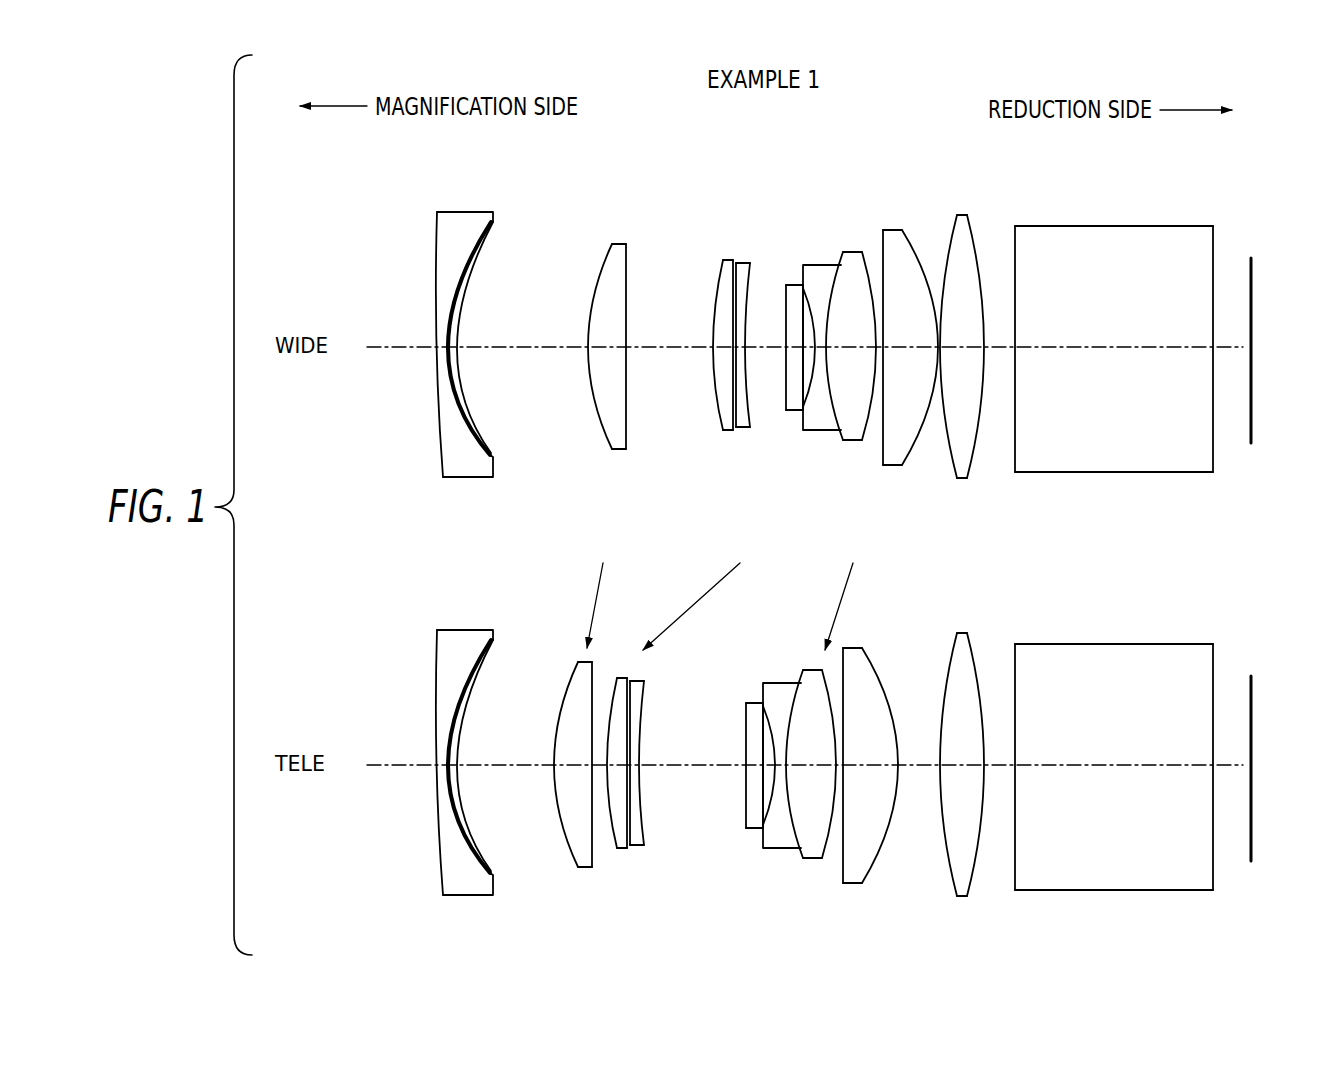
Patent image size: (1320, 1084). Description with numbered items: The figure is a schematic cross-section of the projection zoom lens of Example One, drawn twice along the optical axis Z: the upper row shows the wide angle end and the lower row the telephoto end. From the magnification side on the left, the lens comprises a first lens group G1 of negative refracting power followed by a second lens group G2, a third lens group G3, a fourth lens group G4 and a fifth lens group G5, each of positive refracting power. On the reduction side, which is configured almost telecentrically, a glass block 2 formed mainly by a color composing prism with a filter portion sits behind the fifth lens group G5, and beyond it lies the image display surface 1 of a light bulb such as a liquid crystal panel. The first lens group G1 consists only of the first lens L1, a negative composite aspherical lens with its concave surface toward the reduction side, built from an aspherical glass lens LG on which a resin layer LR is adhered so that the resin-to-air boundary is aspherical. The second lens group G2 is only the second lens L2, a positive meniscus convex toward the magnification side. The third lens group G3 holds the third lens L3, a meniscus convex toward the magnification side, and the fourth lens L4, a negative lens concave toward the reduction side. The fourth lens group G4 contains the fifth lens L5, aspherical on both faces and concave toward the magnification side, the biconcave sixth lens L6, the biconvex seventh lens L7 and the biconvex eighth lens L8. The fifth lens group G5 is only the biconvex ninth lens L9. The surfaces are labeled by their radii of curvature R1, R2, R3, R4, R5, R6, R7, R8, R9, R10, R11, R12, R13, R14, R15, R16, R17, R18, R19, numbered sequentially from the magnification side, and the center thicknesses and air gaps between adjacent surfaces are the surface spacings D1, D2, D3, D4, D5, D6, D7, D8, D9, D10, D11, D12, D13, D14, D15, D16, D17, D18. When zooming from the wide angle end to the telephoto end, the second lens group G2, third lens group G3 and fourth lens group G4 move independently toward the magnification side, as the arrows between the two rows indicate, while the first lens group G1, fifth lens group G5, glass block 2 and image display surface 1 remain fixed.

The image display surface 1 is at (1257, 280).
The glass block 2 is at (1122, 523).
The optical axis Z is at (367, 352).
The first lens group G1 is at (508, 505).
The second lens group G2 is at (642, 505).
The third lens group G3 is at (760, 505).
The fourth lens group G4 is at (933, 505).
The fifth lens group G5 is at (995, 505).
The first lens L1 is at (458, 306).
The glass lens LG is at (458, 319).
The resin layer LR is at (486, 337).
The second lens L2 is at (614, 314).
The third lens L3 is at (707, 307).
The fourth lens L4 is at (761, 314).
The fifth lens L5 is at (787, 301).
The sixth lens L6 is at (826, 301).
The seventh lens L7 is at (862, 309).
The eighth lens L8 is at (897, 306).
The ninth lens L9 is at (971, 317).
The lens surface radius of curvature R1 is at (438, 255).
The lens surface radius of curvature R2 is at (488, 226).
The lens surface radius of curvature R3 is at (461, 335).
The lens surface radius of curvature R4 is at (600, 258).
The lens surface radius of curvature R5 is at (630, 258).
The lens surface radius of curvature R6 is at (715, 290).
The lens surface radius of curvature R7 is at (733, 258).
The lens surface radius of curvature R8 is at (750, 275).
The lens surface radius of curvature R9 is at (787, 342).
The lens surface radius of curvature R10 is at (787, 327).
The lens surface radius of curvature R11 is at (806, 265).
The lens surface radius of curvature R12 is at (840, 252).
The lens surface radius of curvature R13 is at (866, 333).
The lens surface radius of curvature R14 is at (883, 228).
The lens surface radius of curvature R15 is at (915, 250).
The lens surface radius of curvature R16 is at (945, 265).
The lens surface radius of curvature R17 is at (982, 240).
The surface radius of curvature R18 is at (1013, 285).
The surface radius of curvature R19 is at (1213, 250).
The surface spacing D1 is at (437, 349).
The surface spacing D2 is at (455, 349).
The surface spacing D3 is at (530, 349).
The surface spacing D4 is at (598, 350).
The surface spacing D5 is at (662, 349).
The surface spacing D6 is at (722, 349).
The surface spacing D7 is at (740, 349).
The surface spacing D8 is at (758, 349).
The surface spacing D9 is at (787, 350).
The surface spacing D10 is at (800, 350).
The surface spacing D11 is at (825, 349).
The surface spacing D12 is at (850, 349).
The surface spacing D13 is at (873, 349).
The surface spacing D14 is at (895, 349).
The surface spacing D15 is at (938, 350).
The surface spacing D16 is at (962, 349).
The surface spacing D17 is at (1003, 349).
The surface spacing D18 is at (1120, 349).